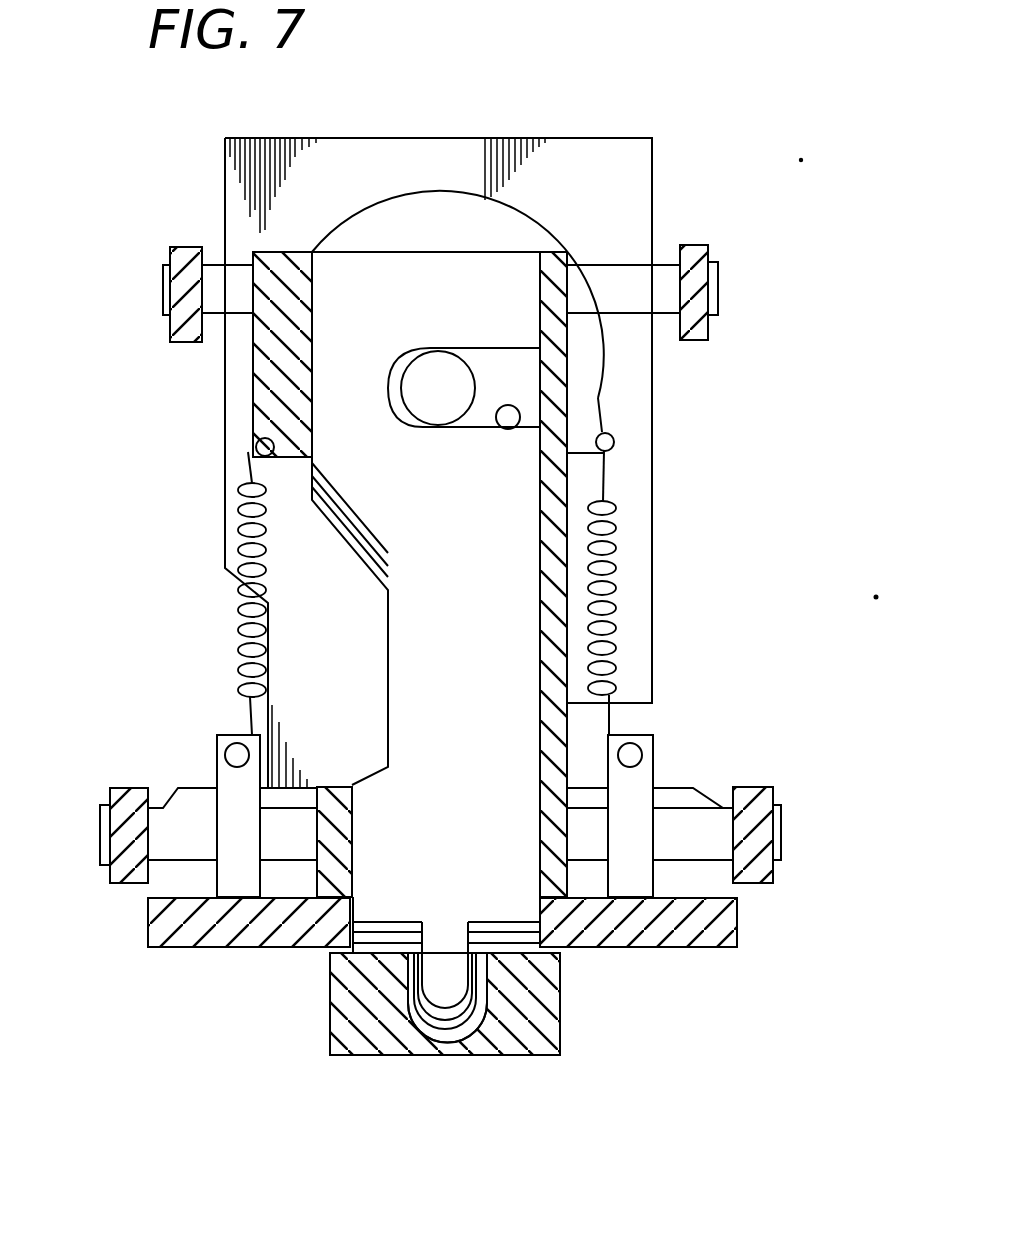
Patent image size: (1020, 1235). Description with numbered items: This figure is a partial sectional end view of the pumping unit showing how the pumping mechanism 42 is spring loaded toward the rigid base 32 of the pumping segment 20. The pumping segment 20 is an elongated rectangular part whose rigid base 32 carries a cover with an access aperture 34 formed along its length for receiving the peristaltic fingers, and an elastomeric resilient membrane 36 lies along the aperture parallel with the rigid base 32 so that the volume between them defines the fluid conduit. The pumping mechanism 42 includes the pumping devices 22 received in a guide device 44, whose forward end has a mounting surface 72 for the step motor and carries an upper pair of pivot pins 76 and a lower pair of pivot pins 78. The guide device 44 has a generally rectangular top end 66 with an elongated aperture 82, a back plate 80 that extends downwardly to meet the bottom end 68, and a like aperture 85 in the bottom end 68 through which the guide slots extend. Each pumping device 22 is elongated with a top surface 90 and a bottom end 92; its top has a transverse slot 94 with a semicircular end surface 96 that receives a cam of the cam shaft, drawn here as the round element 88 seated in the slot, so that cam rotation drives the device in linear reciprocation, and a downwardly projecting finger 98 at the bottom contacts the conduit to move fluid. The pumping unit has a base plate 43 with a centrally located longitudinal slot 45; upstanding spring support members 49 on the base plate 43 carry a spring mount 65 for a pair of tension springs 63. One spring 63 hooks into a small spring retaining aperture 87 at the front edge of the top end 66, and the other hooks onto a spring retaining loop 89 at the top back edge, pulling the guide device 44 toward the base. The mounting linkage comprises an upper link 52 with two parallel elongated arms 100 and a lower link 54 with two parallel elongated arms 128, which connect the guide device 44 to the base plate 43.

The mounting surface 72 is at (487, 138).
The pumping mechanism 42 is at (708, 152).
The elongated arms 100 is at (183, 247).
The upper pivot pins 76 is at (165, 288).
The upper link 52 is at (695, 243).
The top surface 90 is at (500, 247).
The elongated aperture 82 is at (313, 300).
The roller 88 is at (470, 362).
The semicircular end surface 96 is at (398, 388).
The top end 66 is at (248, 398).
The guide device 44 is at (616, 397).
The spring retaining loop 89 is at (614, 441).
The transverse slot 94 is at (506, 430).
The spring retaining aperture 87 is at (284, 460).
The tension springs 63 is at (238, 660).
The spring mount 65 is at (235, 744).
The pumping devices 22 is at (380, 650).
The spring support members 49 is at (216, 770).
The back plate 80 is at (540, 725).
The aperture 85 is at (540, 848).
The elongated arms 128 is at (143, 790).
The lower link 54 is at (768, 773).
The lower pivot pins 78 is at (98, 845).
The bottom end 92 is at (396, 914).
The finger 98 is at (444, 975).
The access aperture 34 is at (478, 945).
The bottom end 68 is at (306, 874).
The longitudinal slot 45 is at (347, 937).
The base plate 43 is at (636, 948).
The pumping segment 20 is at (322, 1042).
The rigid base 32 is at (372, 1055).
The resilient membrane 36 is at (500, 1055).